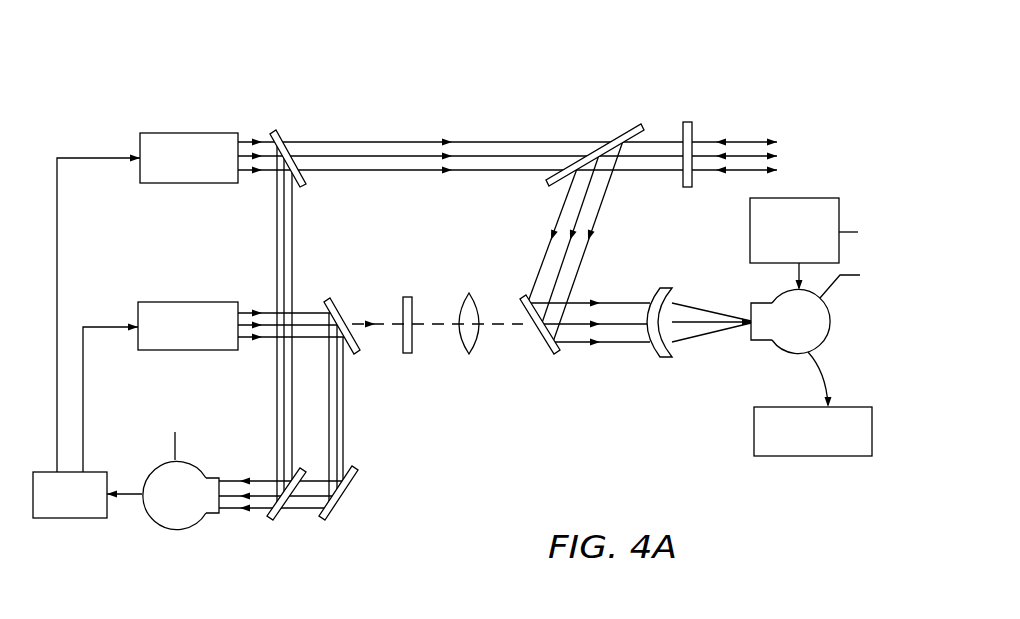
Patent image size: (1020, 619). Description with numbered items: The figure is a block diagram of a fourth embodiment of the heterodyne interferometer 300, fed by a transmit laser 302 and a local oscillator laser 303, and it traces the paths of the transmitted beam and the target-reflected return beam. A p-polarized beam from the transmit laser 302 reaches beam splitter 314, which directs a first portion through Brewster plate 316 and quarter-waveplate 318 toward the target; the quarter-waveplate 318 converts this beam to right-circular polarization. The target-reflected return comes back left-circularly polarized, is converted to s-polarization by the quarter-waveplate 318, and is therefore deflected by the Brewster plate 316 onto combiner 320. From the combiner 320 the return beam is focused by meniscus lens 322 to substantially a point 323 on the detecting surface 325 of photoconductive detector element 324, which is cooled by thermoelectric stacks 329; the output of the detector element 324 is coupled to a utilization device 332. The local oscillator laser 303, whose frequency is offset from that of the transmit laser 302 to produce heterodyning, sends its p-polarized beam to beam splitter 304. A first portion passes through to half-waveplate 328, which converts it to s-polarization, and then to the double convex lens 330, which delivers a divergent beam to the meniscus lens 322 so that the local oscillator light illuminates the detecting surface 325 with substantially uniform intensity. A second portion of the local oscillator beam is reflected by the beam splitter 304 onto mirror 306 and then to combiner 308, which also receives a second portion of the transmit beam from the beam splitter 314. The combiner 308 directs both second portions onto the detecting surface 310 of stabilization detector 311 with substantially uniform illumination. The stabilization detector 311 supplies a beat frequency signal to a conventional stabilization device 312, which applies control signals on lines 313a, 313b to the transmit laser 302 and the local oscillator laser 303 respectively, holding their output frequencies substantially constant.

The heterodyne interferometer 300 is at (415, 117).
The transmit laser 302 is at (190, 133).
The local oscillator laser 303 is at (188, 302).
The beam splitter 304 is at (336, 300).
The mirror 306 is at (323, 520).
The combiner 308 is at (271, 520).
The detecting surface 310 is at (220, 478).
The stabilization detector 311 is at (174, 528).
The stabilization device 312 is at (68, 518).
The control line 313a is at (90, 157).
The control line 313b is at (105, 325).
The beam splitter 314 is at (273, 132).
The Brewster plate 316 is at (637, 127).
The quarter-waveplate 318 is at (688, 122).
The combiner 320 is at (523, 298).
The meniscus lens 322 is at (656, 290).
The point 323 is at (751, 338).
The photoconductive detector element 324 is at (835, 320).
The detecting surface 325 is at (751, 305).
The half-waveplate 328 is at (407, 353).
The thermoelectric stacks 329 is at (750, 228).
The lens 330 is at (470, 354).
The utilization device 332 is at (806, 407).